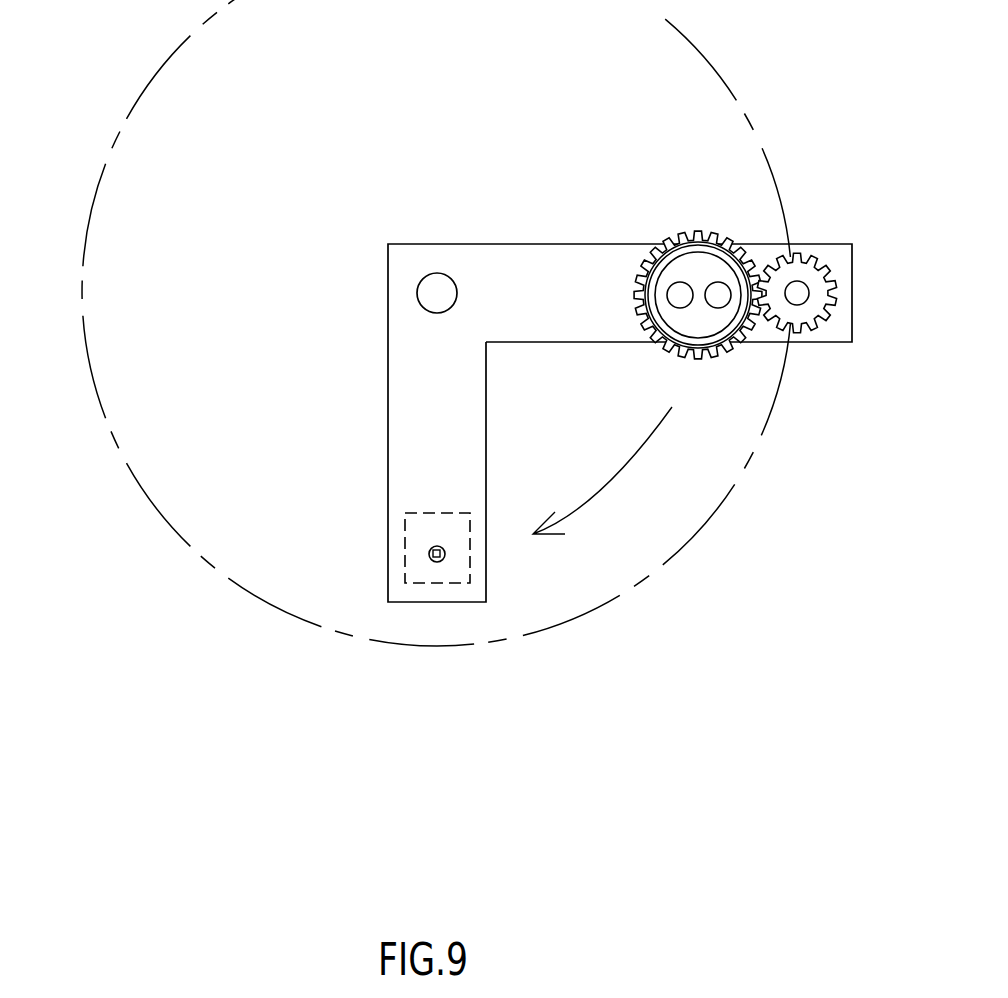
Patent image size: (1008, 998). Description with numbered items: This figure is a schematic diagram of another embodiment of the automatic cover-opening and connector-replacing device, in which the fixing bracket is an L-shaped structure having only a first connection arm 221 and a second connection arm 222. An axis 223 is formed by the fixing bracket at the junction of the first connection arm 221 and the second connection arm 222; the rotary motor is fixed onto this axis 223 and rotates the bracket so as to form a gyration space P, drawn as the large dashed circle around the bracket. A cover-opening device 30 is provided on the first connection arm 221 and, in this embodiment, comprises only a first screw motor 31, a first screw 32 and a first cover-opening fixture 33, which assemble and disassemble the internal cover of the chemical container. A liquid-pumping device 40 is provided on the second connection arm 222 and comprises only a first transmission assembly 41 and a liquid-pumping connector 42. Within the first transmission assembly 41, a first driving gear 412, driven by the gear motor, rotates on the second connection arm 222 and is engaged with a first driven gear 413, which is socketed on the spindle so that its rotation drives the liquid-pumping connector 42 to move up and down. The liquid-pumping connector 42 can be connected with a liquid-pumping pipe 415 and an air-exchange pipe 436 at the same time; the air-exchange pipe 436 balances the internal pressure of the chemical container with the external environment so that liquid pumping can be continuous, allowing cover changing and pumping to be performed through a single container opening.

The gyration space P is at (175, 53).
The cover-opening device 30 is at (403, 529).
The first screw motor 31 is at (403, 567).
The first screw 32 is at (442, 552).
The first cover-opening fixture 33 is at (430, 555).
The liquid-pumping device 40 is at (723, 246).
The first transmission assembly 41 is at (765, 370).
The liquid-pumping connector 42 is at (741, 333).
The first driving gear 412 is at (700, 265).
The first driven gear 413 is at (806, 268).
The liquid-pumping pipe 415 is at (679, 282).
The air-exchange pipe 436 is at (711, 284).
The first connection arm 221 is at (413, 425).
The second connection arm 222 is at (537, 282).
The axis 223 is at (427, 298).